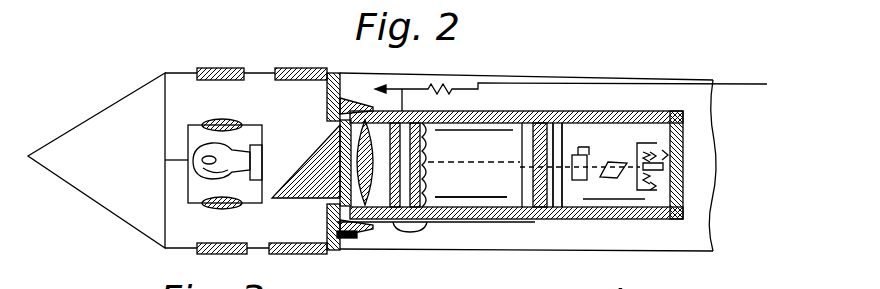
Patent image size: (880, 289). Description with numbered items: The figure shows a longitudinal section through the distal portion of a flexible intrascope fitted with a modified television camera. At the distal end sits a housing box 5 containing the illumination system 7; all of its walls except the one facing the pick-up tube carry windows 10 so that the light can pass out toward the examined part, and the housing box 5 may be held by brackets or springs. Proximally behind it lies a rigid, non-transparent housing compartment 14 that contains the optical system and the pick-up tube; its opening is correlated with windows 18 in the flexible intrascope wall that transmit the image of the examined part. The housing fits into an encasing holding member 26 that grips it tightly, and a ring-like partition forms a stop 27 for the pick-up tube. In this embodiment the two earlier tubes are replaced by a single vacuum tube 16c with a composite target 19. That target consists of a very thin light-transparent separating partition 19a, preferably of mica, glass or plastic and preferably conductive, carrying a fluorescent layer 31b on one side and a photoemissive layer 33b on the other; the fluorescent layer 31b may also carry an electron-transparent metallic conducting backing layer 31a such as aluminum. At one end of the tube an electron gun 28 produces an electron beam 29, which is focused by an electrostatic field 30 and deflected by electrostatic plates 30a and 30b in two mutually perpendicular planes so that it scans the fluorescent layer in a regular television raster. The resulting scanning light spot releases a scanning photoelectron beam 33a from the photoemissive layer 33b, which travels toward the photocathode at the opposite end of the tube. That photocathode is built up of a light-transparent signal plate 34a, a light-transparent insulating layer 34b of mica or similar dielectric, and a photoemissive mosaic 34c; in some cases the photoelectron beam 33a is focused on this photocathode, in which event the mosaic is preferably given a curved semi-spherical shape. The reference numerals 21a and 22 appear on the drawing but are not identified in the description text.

The housing box 5 is at (256, 124).
The illumination system 7 is at (223, 174).
The windows 10 is at (218, 118).
The housing compartment 14 is at (460, 222).
The vacuum tube 16c is at (490, 125).
The windows 18 is at (220, 68).
The composite target 19 is at (568, 108).
The separating partition 19a is at (542, 207).
The spring contact 21a is at (365, 238).
The retaining spring 22 is at (408, 233).
The encasing holding member 26 is at (278, 68).
The stop 27 is at (322, 222).
The electron gun 28 is at (662, 155).
The electron beam 29 is at (655, 158).
The electrostatic field 30 is at (582, 168).
The electrostatic plate 30a is at (578, 180).
The electrostatic plate 30b is at (620, 178).
The conducting backing layer 31a is at (565, 138).
The fluorescent layer 31b is at (556, 138).
The photoelectron beam 33a is at (463, 164).
The photoemissive layer 33b is at (462, 219).
The signal plate 34a is at (385, 222).
The insulating layer 34b is at (420, 222).
The photoemissive mosaic 34c is at (428, 150).